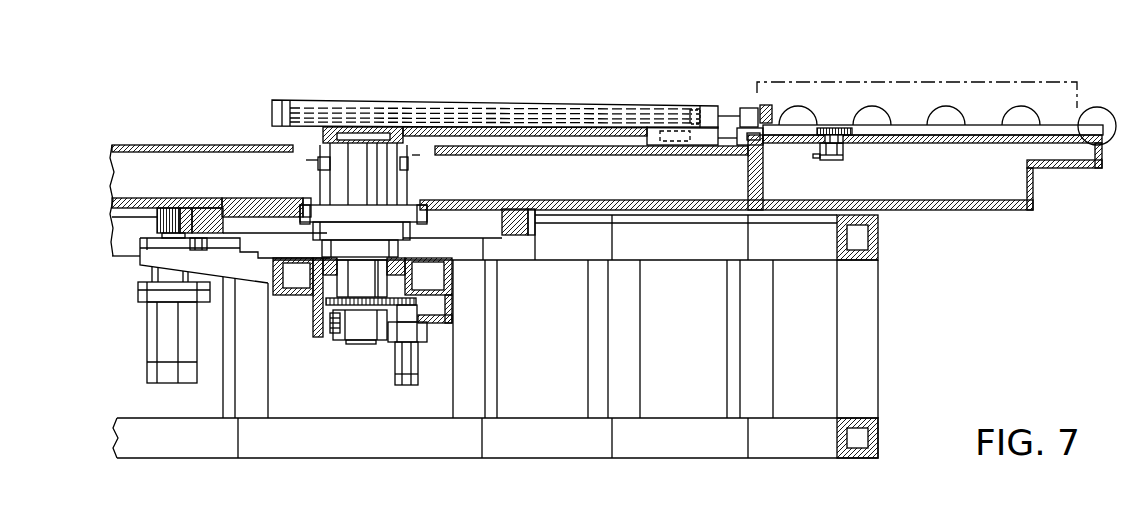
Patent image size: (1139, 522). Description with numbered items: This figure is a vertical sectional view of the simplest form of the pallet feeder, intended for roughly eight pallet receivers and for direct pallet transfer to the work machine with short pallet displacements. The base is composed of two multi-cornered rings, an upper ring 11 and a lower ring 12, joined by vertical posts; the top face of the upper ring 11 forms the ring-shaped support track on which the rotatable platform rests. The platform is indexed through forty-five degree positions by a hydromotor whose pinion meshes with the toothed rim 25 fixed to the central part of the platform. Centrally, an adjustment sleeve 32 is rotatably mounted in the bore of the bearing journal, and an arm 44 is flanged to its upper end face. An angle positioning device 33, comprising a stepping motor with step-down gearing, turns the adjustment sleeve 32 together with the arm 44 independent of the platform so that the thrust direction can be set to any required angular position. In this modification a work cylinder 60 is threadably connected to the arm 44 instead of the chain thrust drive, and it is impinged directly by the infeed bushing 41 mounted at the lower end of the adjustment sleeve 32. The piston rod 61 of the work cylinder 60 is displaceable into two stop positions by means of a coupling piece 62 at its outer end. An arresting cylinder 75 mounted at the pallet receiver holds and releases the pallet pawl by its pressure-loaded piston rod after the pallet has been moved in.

The upper ring 11 is at (878, 243).
The lower ring 12 is at (878, 437).
The toothed rim 25 is at (519, 240).
The adjustment sleeve 32 is at (358, 183).
The angle positioning device 33 is at (429, 347).
The infeed bushing 41 is at (358, 330).
The arm 44 is at (457, 128).
The work cylinder 60 is at (518, 128).
The piston rod 61 is at (670, 118).
The coupling piece 62 is at (750, 108).
The arresting cylinder 75 is at (840, 160).